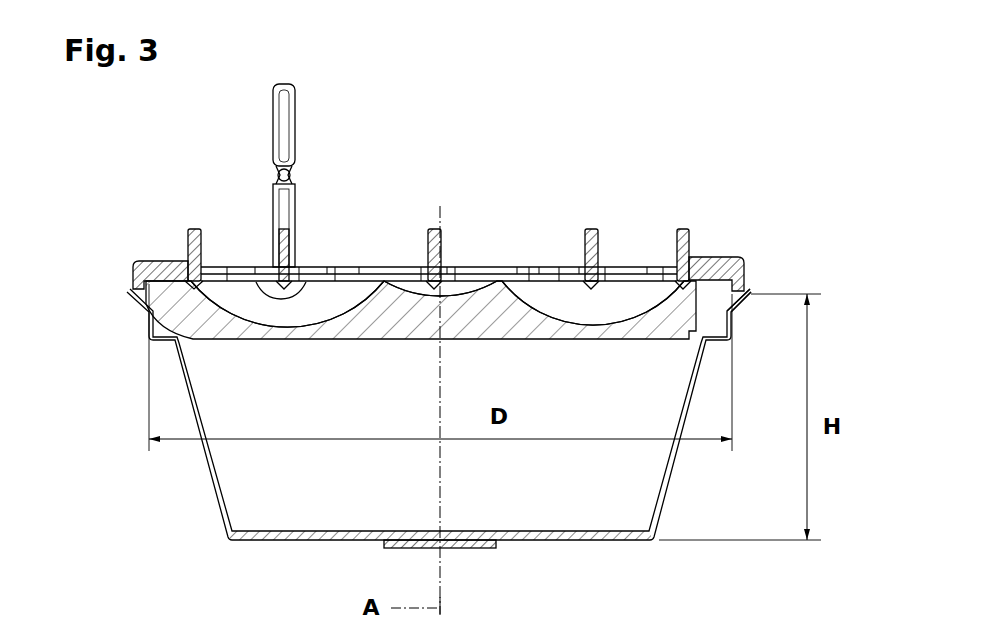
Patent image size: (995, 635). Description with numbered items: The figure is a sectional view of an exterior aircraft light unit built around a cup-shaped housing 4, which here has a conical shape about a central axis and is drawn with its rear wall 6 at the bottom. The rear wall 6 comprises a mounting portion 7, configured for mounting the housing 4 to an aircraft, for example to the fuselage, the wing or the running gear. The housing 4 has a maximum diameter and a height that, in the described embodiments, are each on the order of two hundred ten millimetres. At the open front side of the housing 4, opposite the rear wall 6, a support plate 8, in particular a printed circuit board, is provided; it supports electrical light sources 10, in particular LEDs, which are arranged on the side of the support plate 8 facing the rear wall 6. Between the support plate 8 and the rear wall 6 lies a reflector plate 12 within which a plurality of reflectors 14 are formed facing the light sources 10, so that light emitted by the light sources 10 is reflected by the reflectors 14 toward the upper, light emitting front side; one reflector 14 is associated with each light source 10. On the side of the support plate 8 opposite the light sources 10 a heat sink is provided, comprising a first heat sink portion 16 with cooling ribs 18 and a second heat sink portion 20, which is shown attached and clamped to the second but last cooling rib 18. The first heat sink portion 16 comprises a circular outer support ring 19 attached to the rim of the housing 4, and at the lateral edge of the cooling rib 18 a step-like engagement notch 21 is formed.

The cup-shaped housing 4 is at (194, 499).
The rear wall 6 is at (587, 542).
The mounting portion 7 is at (485, 550).
The support plate 8 is at (525, 268).
The electrical light sources 10 is at (283, 287).
The reflector plate 12 is at (413, 312).
The reflectors 14 is at (239, 304).
The first heat sink portion 16 is at (486, 263).
The cooling ribs 18 is at (194, 231).
The circular outer support ring 19 is at (742, 258).
The second heat sink portion 20 is at (318, 129).
The engagement notch 21 is at (730, 240).